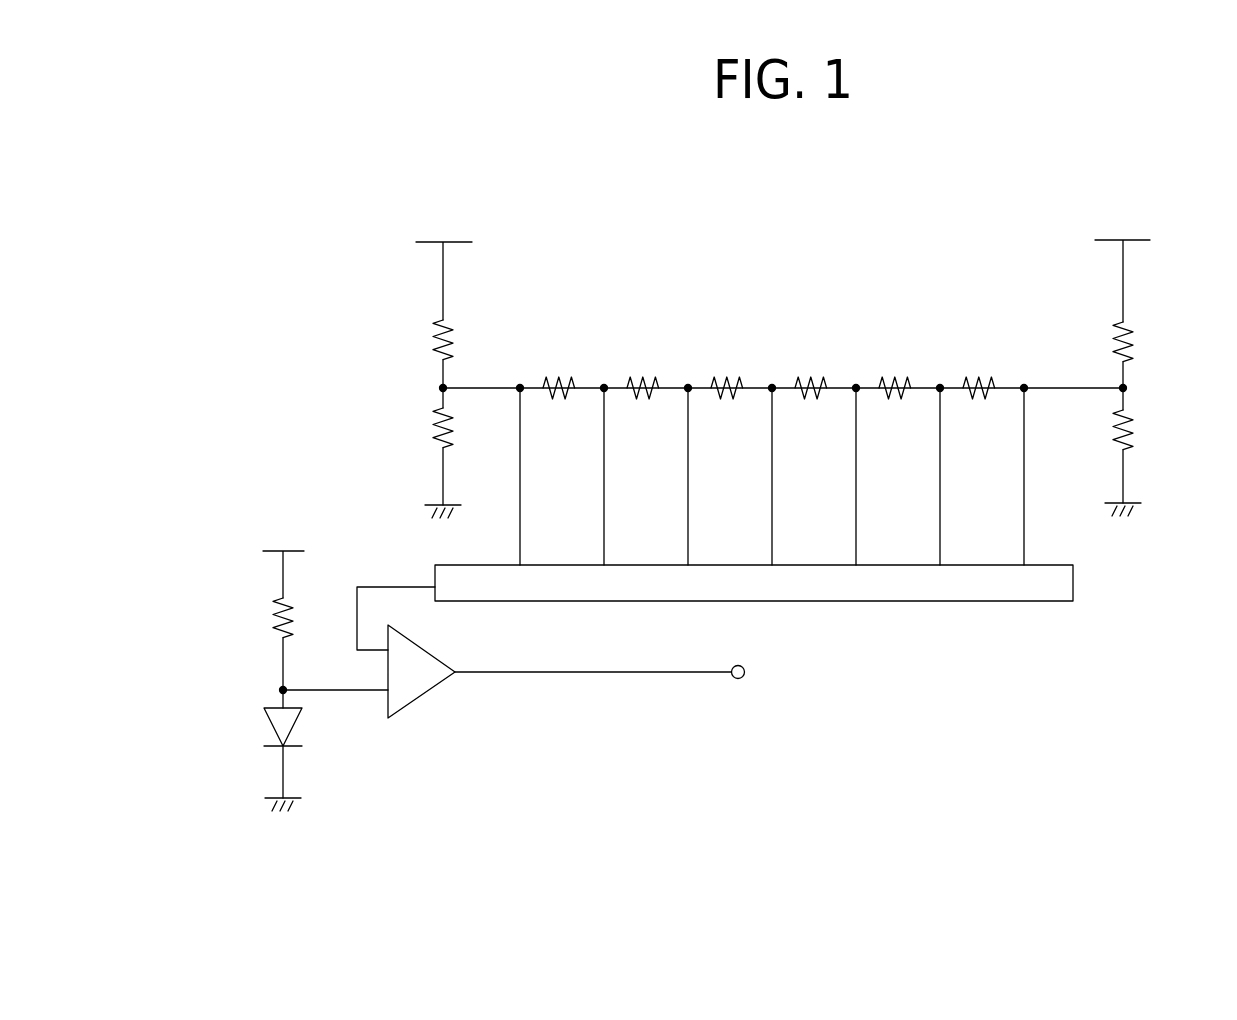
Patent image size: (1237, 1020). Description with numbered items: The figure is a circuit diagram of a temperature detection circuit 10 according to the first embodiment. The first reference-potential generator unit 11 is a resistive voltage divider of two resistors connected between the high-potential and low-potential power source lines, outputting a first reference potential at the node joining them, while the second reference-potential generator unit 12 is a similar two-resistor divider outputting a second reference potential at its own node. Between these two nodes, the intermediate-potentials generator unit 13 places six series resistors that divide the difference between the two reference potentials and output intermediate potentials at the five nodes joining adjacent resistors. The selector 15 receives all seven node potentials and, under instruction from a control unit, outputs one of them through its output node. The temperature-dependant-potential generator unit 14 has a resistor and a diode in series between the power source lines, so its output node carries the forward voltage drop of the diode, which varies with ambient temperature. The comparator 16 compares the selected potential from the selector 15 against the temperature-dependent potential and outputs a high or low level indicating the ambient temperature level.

The temperature detection circuit 10 is at (966, 181).
The first reference-potential generator unit 11 is at (472, 293).
The second reference-potential generator unit 12 is at (1090, 287).
The intermediate-potentials generator unit 13 is at (752, 320).
The temperature-dependant-potential generator unit 14 is at (251, 571).
The selector 15 is at (966, 601).
The comparator 16 is at (437, 654).